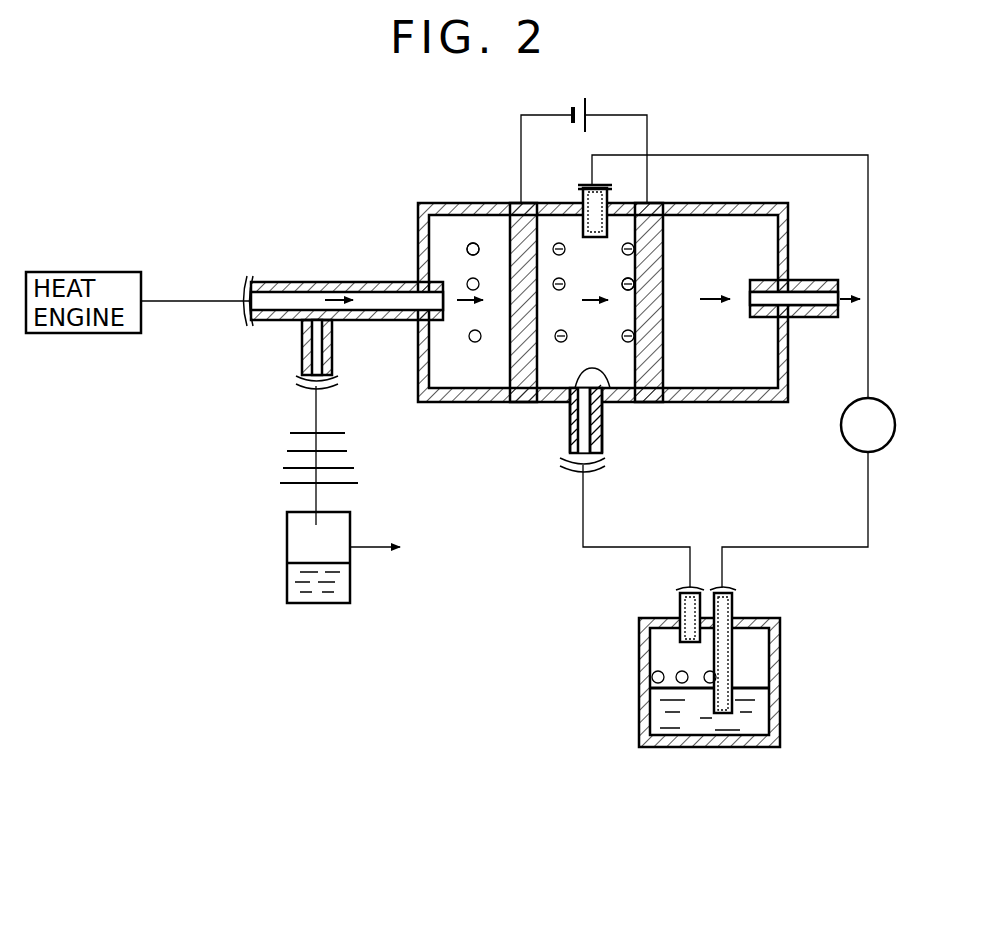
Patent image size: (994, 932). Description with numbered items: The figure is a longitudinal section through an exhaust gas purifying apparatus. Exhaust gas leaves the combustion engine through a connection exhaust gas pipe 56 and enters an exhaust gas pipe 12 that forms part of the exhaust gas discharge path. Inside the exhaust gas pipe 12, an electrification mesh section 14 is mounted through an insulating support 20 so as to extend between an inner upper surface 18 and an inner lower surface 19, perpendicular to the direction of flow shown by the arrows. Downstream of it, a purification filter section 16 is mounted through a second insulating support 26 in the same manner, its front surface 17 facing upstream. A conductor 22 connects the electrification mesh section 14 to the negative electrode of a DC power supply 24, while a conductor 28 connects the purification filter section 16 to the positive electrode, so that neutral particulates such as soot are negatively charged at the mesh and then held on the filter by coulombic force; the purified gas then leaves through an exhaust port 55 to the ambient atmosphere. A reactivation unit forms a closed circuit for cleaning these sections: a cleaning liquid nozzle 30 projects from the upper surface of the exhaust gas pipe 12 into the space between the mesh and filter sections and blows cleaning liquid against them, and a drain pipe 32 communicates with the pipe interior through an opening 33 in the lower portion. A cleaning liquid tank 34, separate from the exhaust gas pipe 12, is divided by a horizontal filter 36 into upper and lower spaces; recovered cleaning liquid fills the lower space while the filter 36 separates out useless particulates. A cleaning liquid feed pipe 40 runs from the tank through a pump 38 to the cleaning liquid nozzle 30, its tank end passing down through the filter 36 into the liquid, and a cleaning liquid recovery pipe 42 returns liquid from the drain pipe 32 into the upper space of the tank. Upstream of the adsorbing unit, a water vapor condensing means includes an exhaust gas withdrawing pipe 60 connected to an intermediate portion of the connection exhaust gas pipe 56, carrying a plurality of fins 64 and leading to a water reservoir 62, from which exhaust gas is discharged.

The exhaust gas pipe 12 is at (443, 403).
The electrification mesh section 14 is at (513, 235).
The purification filter section 16 is at (655, 263).
The front surface 17 is at (635, 296).
The inner upper surface 18 is at (738, 225).
The inner lower surface 19 is at (746, 386).
The insulating support 20 is at (512, 204).
The conductor 22 is at (521, 140).
The DC power supply 24 is at (578, 106).
The insulating support 26 is at (664, 203).
The conductor 28 is at (640, 115).
The cleaning liquid nozzle 30 is at (584, 205).
The drain pipe 32 is at (566, 437).
The opening 33 is at (603, 408).
The cleaning liquid tank 34 is at (722, 747).
The filter 36 is at (753, 683).
The pump 38 is at (875, 452).
The cleaning liquid feed pipe 40 is at (868, 218).
The cleaning liquid recovery pipe 42 is at (583, 535).
The outlet pipe 55 is at (818, 317).
The connection exhaust gas pipe 56 is at (300, 282).
The exhaust gas withdrawing pipe 60 is at (302, 350).
The water reservoir 62 is at (287, 575).
The fins 64 is at (290, 455).